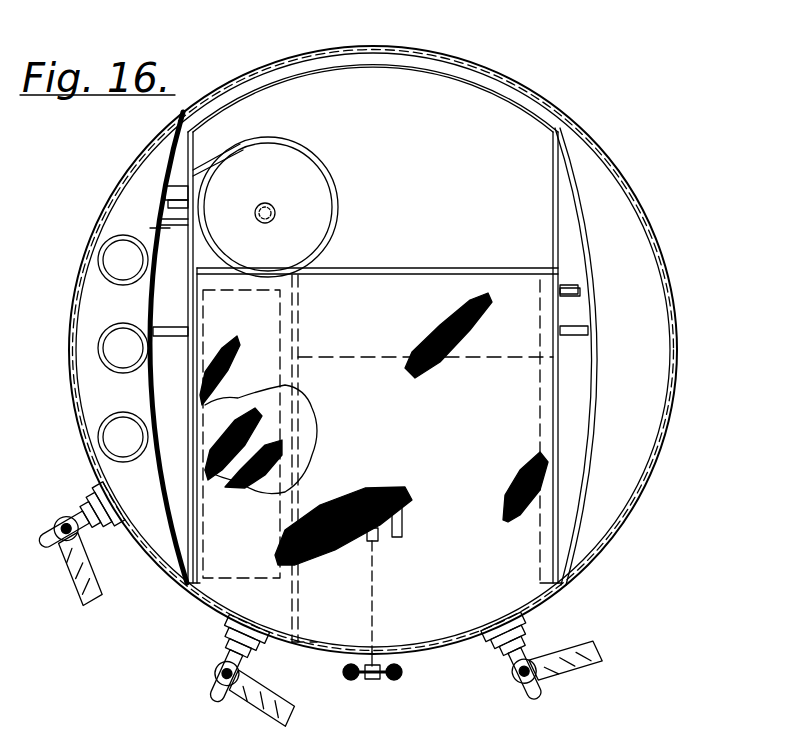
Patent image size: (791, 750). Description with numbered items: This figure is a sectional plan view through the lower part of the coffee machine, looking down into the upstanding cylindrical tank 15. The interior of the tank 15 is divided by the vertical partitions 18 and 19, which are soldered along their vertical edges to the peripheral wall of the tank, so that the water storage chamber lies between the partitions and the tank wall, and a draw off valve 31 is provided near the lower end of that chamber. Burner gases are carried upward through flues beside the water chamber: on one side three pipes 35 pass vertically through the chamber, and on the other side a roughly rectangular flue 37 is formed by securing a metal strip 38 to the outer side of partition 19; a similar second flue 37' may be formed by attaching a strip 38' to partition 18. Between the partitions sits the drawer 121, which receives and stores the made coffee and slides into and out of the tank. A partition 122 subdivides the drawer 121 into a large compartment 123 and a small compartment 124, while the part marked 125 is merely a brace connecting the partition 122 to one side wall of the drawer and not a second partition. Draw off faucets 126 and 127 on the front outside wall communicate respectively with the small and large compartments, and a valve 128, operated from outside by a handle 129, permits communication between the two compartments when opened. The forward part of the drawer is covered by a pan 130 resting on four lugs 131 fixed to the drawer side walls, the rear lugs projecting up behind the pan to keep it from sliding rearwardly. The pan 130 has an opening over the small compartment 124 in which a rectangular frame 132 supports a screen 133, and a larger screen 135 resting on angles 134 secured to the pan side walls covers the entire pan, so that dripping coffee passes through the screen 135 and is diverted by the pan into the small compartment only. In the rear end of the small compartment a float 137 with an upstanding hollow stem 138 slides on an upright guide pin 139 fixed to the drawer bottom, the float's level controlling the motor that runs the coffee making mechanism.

The cylindrical tank 15 is at (662, 280).
The vertical partition 18 is at (150, 396).
The vertical partition 19 is at (595, 447).
The draw off valve 31 is at (62, 513).
The flue pipes 35 is at (105, 262).
The flue 37 is at (443, 325).
The second flue 37' is at (111, 216).
The metal strip 38 is at (598, 285).
The strip 38' is at (158, 193).
The drawer 121 is at (435, 652).
The partition 122 is at (296, 325).
The large compartment 123 is at (377, 252).
The small compartment 124 is at (185, 232).
The brace 125 is at (375, 360).
The draw off faucet 126 is at (212, 686).
The draw off faucet 127 is at (545, 690).
The valve 128 is at (405, 523).
The handle 129 is at (375, 682).
The pan 130 is at (382, 266).
The lugs 131 is at (165, 287).
The rectangular frame 132 is at (275, 458).
The screen 133 is at (262, 418).
The angles 134 is at (540, 408).
The screen 135 is at (457, 335).
The float 137 is at (320, 190).
The hollow stem 138 is at (265, 203).
The guide pin 139 is at (273, 214).